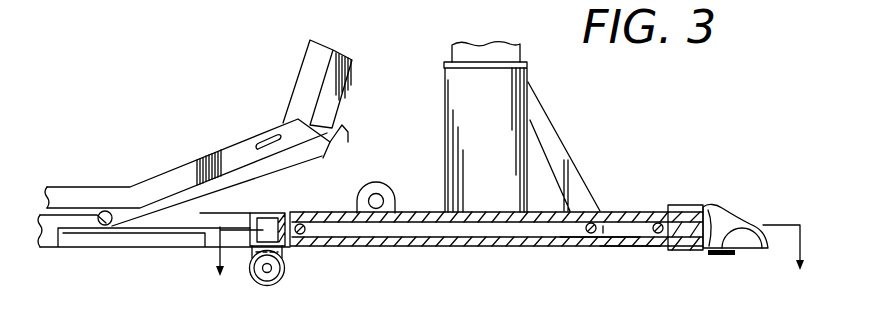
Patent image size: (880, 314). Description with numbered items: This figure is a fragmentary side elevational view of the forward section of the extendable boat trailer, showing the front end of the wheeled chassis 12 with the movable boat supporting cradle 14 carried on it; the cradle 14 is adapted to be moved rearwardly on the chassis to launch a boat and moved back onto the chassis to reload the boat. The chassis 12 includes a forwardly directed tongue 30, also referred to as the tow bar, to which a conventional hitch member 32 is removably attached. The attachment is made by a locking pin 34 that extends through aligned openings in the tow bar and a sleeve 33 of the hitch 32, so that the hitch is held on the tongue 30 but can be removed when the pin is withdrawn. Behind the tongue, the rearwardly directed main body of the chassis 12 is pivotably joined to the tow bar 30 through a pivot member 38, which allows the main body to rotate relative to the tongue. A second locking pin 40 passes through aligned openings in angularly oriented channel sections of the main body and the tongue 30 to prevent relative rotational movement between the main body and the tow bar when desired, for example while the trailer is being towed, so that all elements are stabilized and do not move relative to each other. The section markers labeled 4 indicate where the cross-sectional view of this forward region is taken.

The section line 4- 4 is at (508, 265).
The wheeled chassis 12 is at (628, 207).
The boat supporting cradle 14 is at (304, 184).
The tongue 30 is at (603, 240).
The hitch member 32 is at (738, 207).
The sleeve 33 is at (660, 250).
The locking pin 34 is at (638, 237).
The pivot member 38 is at (304, 234).
The second locking pin 40 is at (586, 232).